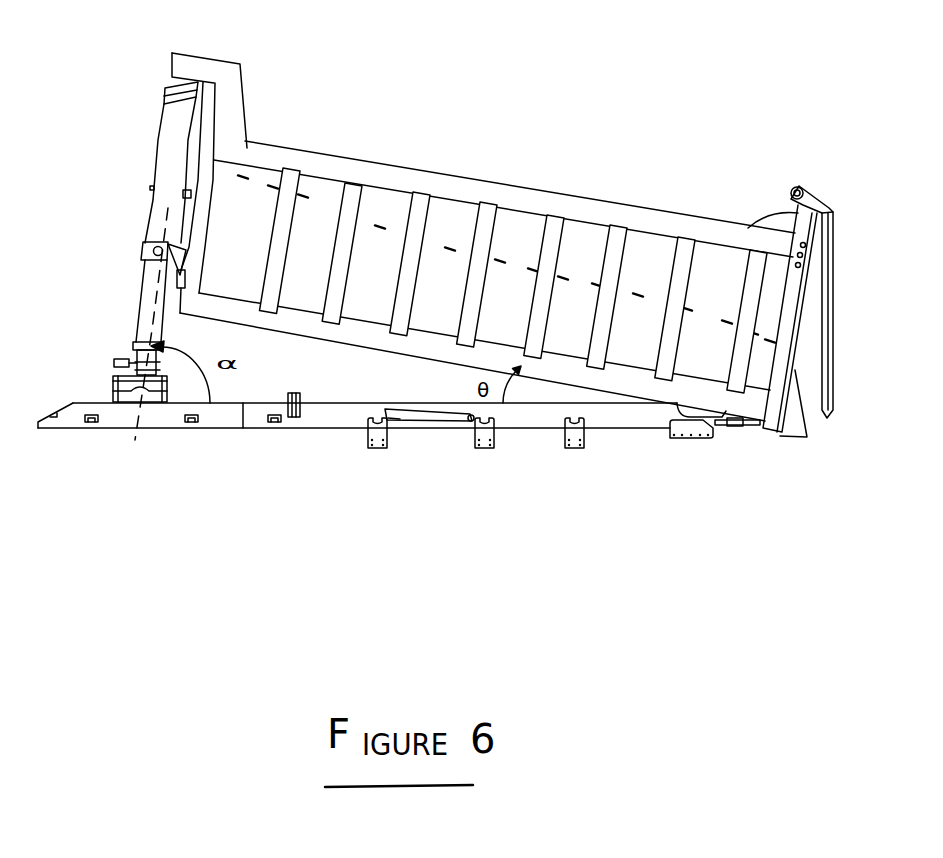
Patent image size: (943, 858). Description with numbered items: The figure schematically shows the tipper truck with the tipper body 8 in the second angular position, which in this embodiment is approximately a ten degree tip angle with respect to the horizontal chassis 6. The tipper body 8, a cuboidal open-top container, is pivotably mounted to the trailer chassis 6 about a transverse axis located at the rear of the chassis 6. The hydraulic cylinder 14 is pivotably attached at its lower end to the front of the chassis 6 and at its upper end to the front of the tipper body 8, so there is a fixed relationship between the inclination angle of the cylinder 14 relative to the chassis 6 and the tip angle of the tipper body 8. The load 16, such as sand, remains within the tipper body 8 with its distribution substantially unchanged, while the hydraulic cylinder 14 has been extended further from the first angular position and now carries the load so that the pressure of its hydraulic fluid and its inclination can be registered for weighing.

The chassis 6 is at (532, 428).
The tipper body 8 is at (462, 178).
The hydraulic cylinder 14 is at (158, 155).
The load 16 is at (322, 203).